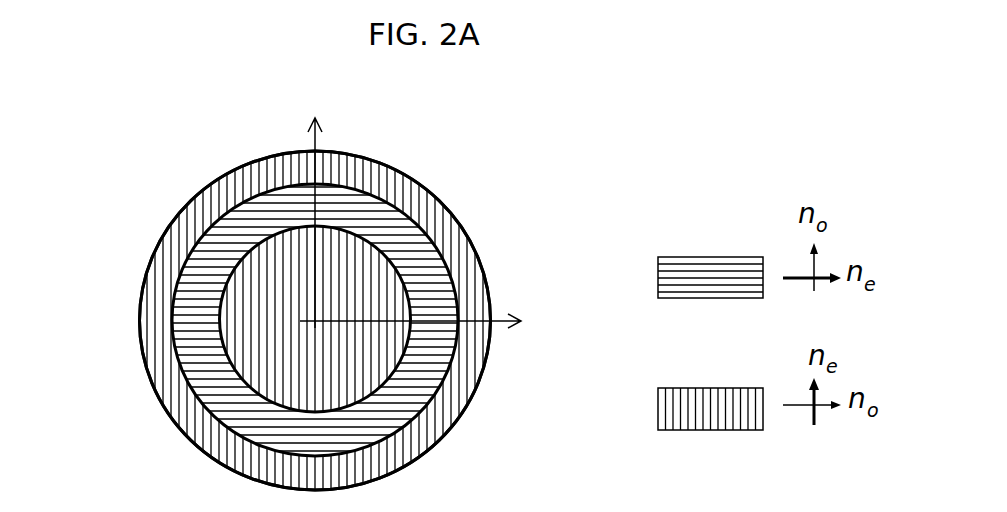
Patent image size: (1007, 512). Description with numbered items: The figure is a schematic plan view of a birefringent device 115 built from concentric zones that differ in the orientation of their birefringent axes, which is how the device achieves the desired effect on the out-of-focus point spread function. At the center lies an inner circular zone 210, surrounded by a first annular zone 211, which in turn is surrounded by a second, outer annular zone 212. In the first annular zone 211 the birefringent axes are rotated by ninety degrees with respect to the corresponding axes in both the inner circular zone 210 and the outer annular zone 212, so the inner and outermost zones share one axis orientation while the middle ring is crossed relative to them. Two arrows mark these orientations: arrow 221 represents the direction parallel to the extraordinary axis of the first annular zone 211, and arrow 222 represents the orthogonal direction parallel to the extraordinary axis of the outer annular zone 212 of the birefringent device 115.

The birefringent device 115 is at (162, 151).
The inner circular zone 210 is at (255, 317).
The first annular zone 211 is at (183, 342).
The second, outer annular zone 212 is at (173, 413).
The arrow 221 is at (492, 313).
The arrow 222 is at (308, 131).